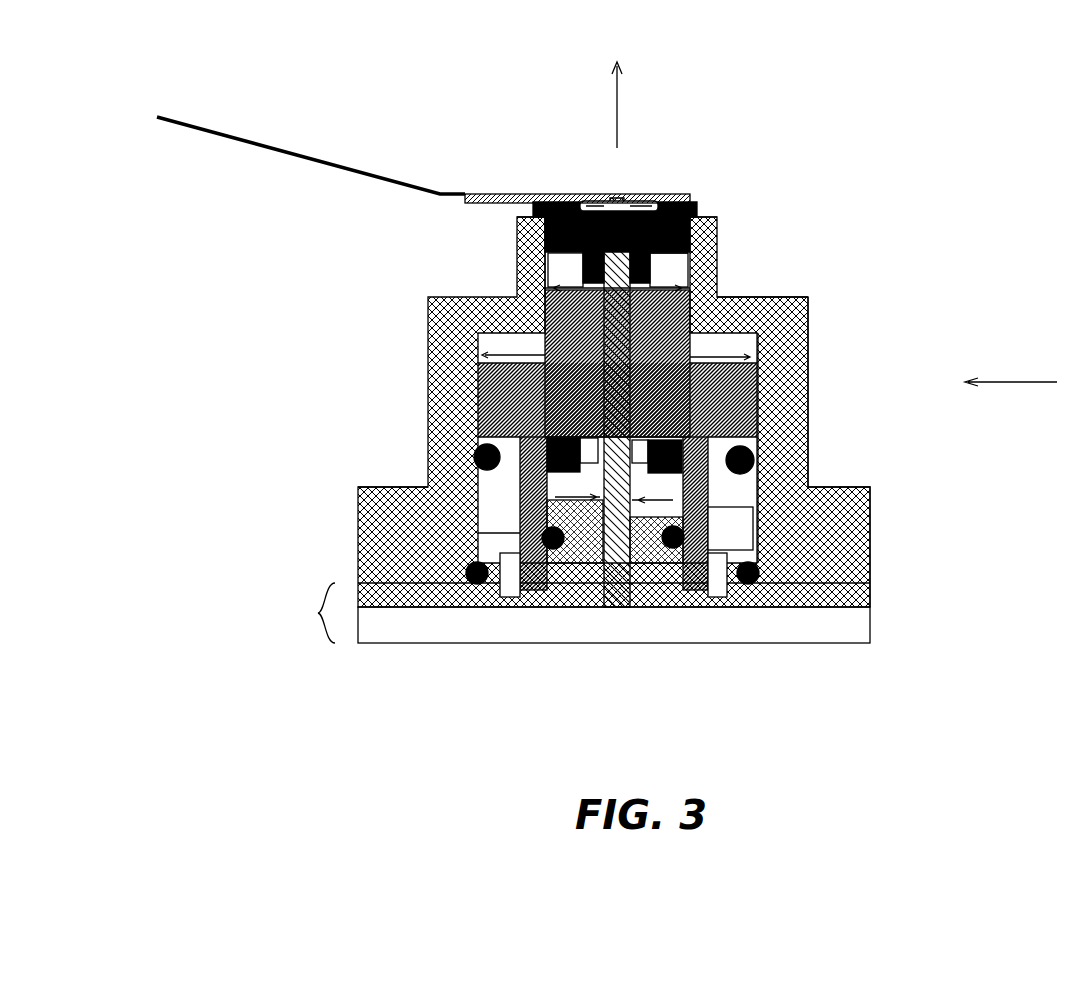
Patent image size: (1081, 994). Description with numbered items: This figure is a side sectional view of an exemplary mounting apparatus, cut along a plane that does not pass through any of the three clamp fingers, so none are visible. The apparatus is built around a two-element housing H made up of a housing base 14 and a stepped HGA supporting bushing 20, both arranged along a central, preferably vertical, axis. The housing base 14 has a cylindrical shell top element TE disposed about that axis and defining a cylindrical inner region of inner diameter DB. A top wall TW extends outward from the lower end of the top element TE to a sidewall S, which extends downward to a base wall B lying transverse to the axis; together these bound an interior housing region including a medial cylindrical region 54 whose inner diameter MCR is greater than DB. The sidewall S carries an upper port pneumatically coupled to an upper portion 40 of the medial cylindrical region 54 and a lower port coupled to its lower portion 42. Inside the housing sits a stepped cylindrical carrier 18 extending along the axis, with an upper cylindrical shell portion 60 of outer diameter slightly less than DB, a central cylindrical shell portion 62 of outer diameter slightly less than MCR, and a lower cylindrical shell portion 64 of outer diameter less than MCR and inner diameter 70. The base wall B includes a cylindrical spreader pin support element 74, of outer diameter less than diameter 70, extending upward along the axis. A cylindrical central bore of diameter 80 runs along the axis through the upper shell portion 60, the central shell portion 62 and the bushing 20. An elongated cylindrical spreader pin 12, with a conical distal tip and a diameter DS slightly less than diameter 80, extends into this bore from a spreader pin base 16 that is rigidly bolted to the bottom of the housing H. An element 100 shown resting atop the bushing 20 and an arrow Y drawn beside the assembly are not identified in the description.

The slider / cover plate 100 is at (487, 193).
The HGA supporting bushing 20 is at (690, 200).
The cylindrical shell top element TE is at (717, 237).
The inner diameter of top element DB is at (687, 277).
The top wall TW is at (807, 313).
The inner diameter of medial cylindrical region MCR is at (807, 352).
The sidewall S is at (807, 397).
The medial cylindrical region 54 is at (760, 430).
The upper cylindrical shell portion 60 is at (497, 297).
The upper portion of medial cylindrical region 40 is at (467, 323).
The diameter of central bore 80 is at (520, 395).
The central cylindrical shell portion 62 is at (520, 437).
The diameter of spreader pin DS is at (478, 487).
The lower portion of medial cylindrical region 42 is at (585, 500).
The housing base 14 is at (357, 540).
The base wall B is at (317, 613).
The spreader pin base 16 is at (452, 607).
The cylindrical spreader pin support element 74 is at (577, 593).
The spreader pin 12 is at (613, 593).
The inner diameter of lower cylindrical shell portion 70 is at (685, 608).
The lower cylindrical shell portion 64 is at (693, 593).
The stepped cylindrical carrier 18 is at (866, 540).
The vertical axis Y is at (618, 100).
The housing H is at (1013, 382).